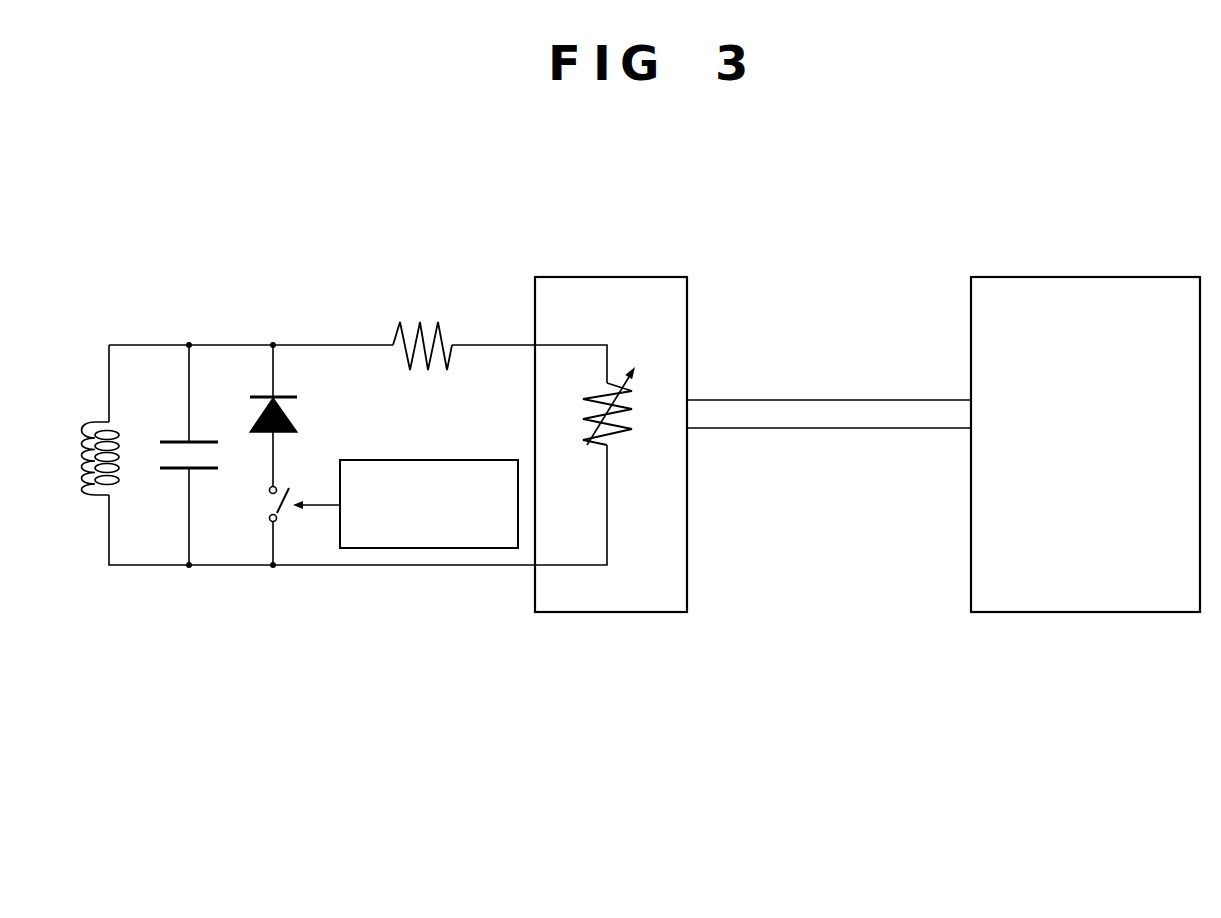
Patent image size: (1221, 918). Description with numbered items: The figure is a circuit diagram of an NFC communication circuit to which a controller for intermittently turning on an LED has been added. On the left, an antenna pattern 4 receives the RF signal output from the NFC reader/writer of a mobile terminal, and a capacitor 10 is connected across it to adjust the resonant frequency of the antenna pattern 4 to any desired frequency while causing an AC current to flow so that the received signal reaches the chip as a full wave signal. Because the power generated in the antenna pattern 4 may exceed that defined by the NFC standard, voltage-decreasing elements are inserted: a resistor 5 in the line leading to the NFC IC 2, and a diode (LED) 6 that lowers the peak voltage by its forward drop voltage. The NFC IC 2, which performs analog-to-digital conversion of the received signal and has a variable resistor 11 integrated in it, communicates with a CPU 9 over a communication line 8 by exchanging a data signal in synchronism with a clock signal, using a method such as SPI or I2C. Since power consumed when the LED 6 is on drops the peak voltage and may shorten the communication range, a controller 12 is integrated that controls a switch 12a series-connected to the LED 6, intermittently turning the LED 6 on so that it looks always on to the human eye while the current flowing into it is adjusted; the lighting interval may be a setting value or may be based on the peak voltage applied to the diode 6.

The NFC IC 2 is at (667, 277).
The antenna pattern 4 is at (98, 421).
The resistor 5 is at (428, 320).
The diode (LED) 6 is at (290, 403).
The communication line 8 is at (889, 400).
The CPU 9 is at (1146, 277).
The capacitor 10 is at (202, 438).
The variable resistor 11 is at (633, 418).
The controller 12 is at (473, 460).
The switch 12a is at (266, 504).